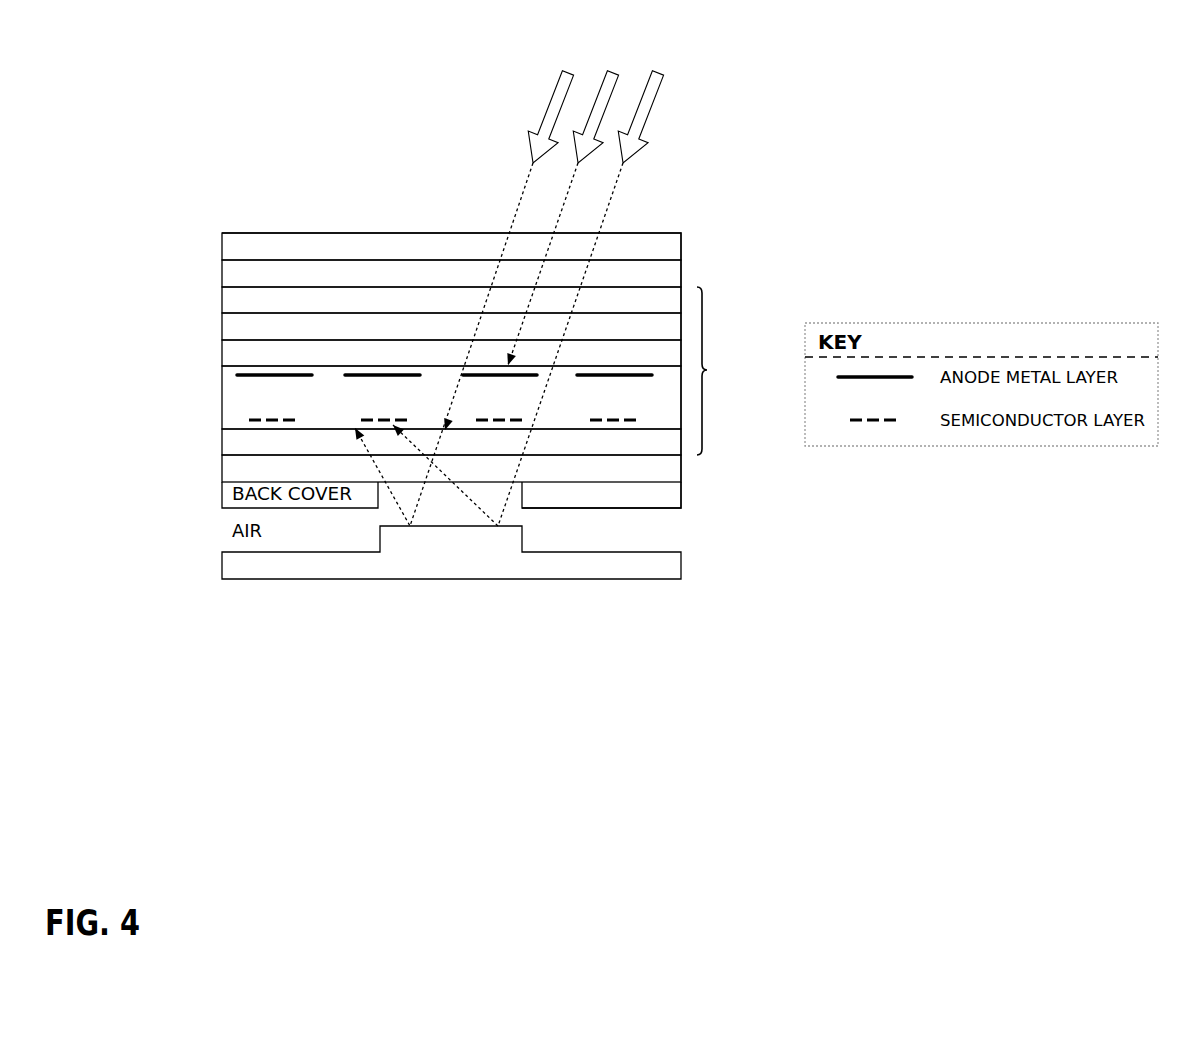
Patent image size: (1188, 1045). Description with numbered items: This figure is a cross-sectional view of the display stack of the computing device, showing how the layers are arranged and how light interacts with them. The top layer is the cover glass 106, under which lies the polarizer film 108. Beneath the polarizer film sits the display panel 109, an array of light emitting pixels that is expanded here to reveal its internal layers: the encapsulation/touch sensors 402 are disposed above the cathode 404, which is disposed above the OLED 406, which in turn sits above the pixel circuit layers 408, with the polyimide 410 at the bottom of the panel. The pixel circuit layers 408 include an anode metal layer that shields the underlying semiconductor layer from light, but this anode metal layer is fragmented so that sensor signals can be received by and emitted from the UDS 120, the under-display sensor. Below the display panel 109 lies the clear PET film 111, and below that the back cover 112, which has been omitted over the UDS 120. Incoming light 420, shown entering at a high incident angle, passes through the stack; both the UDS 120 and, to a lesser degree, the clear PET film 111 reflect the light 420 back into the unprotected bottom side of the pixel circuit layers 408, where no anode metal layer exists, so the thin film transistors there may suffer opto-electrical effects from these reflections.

The cover glass 106 is at (222, 237).
The polarizer film 108 is at (222, 263).
The encapsulation/touch sensors 402 is at (222, 290).
The cathode 404 is at (222, 316).
The OLED 406 is at (222, 343).
The pixel circuit layers 408 is at (222, 392).
The polyimide 410 is at (222, 430).
The clear PET film 111 is at (222, 457).
The back cover 112 is at (222, 483).
The UDS 120 is at (222, 553).
The display panel 109 is at (720, 371).
The light 420 is at (682, 70).